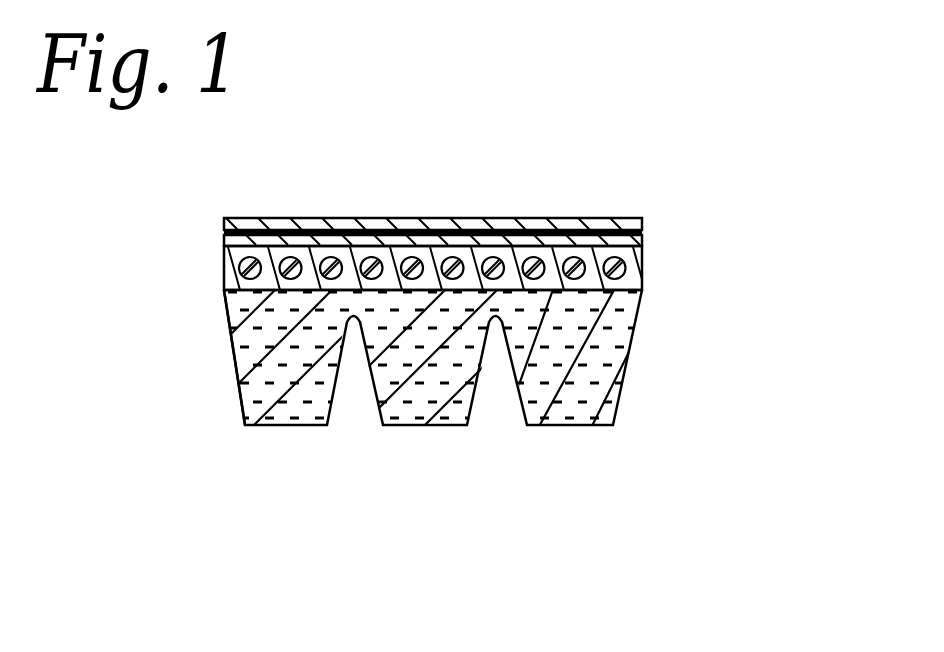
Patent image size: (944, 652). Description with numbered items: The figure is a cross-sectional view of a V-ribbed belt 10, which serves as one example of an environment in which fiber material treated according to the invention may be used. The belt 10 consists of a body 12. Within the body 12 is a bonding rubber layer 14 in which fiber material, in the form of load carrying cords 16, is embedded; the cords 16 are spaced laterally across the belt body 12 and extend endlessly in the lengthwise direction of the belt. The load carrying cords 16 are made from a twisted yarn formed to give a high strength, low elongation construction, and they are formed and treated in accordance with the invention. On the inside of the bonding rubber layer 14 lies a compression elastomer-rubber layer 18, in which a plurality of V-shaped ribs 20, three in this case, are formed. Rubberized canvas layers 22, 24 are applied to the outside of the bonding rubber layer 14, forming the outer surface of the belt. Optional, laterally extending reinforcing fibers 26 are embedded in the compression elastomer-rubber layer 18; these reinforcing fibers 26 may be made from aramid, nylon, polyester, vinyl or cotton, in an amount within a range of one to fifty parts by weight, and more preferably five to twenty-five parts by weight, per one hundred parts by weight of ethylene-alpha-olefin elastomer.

The V-ribbed belt 10 is at (693, 152).
The body 12 is at (221, 270).
The bonding rubber layer 14 is at (224, 292).
The load carrying cords 16 is at (643, 272).
The compression elastomer-rubber layer 18 is at (240, 405).
The V-shaped ribs 20 is at (298, 428).
The rubberized canvas layer 22 is at (643, 237).
The rubberized canvas layer 24 is at (645, 217).
The reinforcing fibers 26 is at (588, 328).